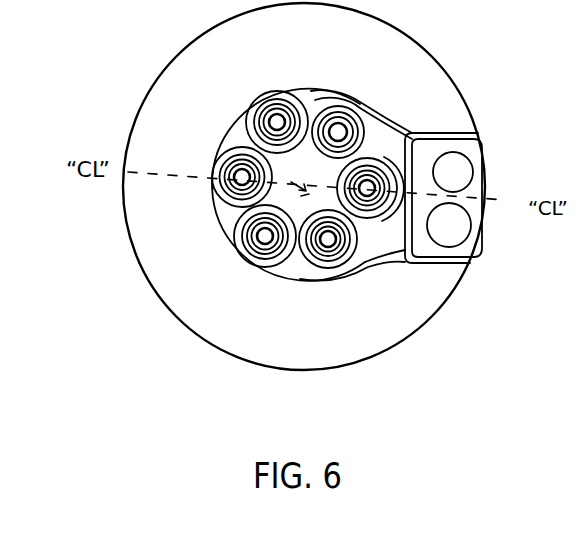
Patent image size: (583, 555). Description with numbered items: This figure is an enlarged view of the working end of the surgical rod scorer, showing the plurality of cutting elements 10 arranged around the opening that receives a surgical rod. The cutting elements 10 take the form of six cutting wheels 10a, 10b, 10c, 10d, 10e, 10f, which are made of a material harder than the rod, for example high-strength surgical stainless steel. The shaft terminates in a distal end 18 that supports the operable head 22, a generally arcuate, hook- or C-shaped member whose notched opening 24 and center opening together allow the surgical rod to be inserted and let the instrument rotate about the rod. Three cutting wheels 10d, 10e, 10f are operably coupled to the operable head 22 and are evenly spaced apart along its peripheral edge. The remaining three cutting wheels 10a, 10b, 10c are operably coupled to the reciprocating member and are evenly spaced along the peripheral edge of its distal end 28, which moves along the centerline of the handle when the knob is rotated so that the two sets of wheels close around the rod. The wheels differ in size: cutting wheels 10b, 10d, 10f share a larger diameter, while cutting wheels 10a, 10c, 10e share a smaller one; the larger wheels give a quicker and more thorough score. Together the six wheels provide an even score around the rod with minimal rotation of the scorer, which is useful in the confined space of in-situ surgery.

The cutting elements 10 is at (351, 73).
The cutting wheel 10a is at (358, 104).
The cutting wheel 10b is at (383, 213).
The cutting wheel 10c is at (360, 264).
The cutting wheel 10d is at (250, 266).
The cutting wheel 10e is at (217, 197).
The cutting wheel 10f is at (252, 118).
The distal end 18 is at (408, 129).
The operable head 22 is at (233, 127).
The notched opening 24 is at (248, 137).
The distal end 28 is at (403, 255).